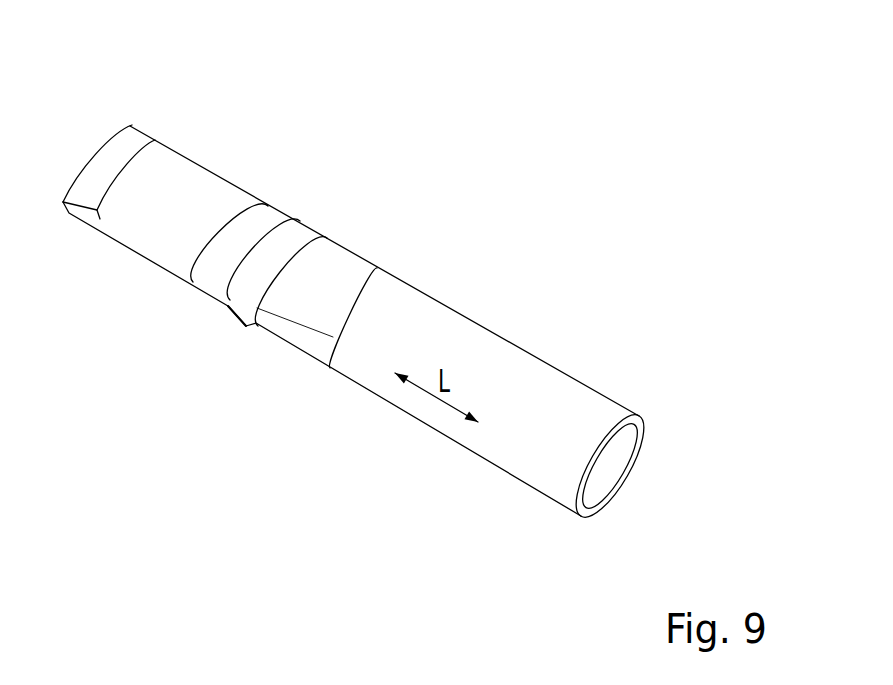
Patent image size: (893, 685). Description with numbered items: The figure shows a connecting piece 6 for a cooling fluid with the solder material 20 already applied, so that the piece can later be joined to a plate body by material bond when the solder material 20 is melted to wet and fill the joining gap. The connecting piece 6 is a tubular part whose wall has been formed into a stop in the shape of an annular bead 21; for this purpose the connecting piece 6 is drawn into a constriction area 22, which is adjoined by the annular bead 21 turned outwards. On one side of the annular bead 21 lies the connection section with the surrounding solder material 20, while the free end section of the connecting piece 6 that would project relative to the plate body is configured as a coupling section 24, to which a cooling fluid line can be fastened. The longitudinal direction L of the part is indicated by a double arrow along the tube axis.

The connecting piece 6 is at (500, 267).
The solder material 20 is at (178, 172).
The annular bead 21 is at (310, 228).
The constriction area 22 is at (332, 255).
The coupling section 24 is at (560, 390).